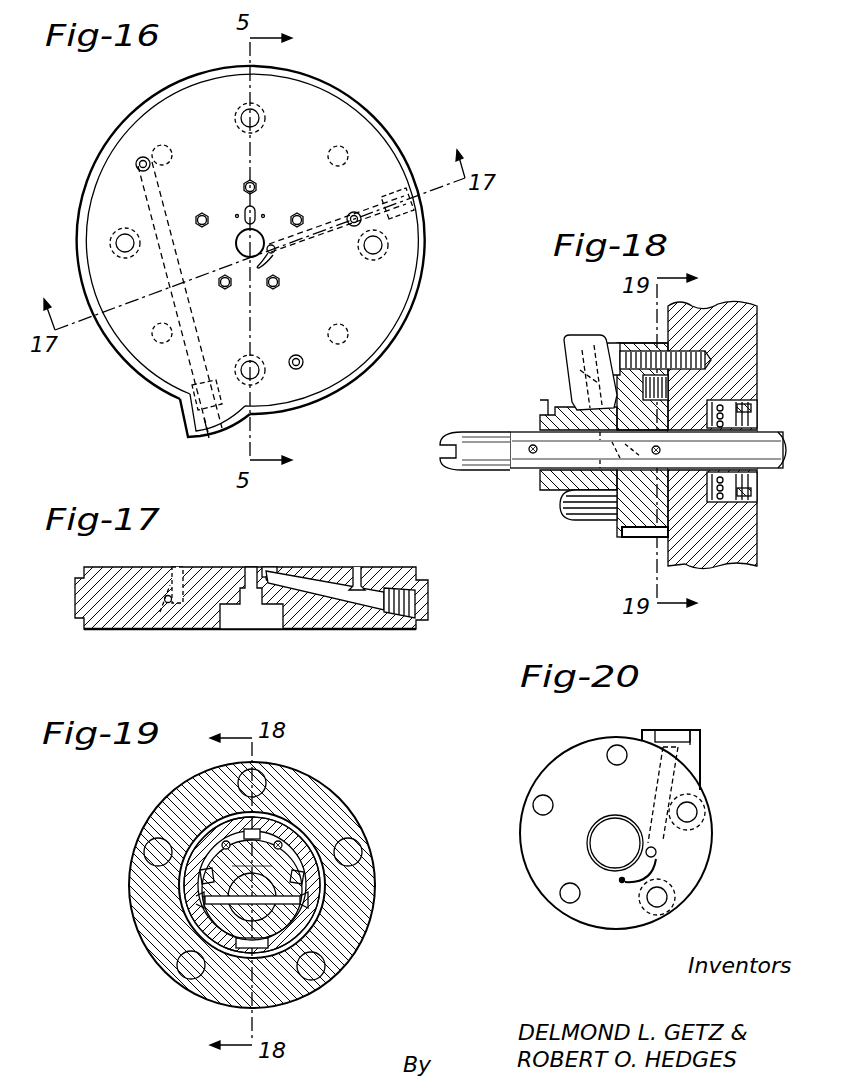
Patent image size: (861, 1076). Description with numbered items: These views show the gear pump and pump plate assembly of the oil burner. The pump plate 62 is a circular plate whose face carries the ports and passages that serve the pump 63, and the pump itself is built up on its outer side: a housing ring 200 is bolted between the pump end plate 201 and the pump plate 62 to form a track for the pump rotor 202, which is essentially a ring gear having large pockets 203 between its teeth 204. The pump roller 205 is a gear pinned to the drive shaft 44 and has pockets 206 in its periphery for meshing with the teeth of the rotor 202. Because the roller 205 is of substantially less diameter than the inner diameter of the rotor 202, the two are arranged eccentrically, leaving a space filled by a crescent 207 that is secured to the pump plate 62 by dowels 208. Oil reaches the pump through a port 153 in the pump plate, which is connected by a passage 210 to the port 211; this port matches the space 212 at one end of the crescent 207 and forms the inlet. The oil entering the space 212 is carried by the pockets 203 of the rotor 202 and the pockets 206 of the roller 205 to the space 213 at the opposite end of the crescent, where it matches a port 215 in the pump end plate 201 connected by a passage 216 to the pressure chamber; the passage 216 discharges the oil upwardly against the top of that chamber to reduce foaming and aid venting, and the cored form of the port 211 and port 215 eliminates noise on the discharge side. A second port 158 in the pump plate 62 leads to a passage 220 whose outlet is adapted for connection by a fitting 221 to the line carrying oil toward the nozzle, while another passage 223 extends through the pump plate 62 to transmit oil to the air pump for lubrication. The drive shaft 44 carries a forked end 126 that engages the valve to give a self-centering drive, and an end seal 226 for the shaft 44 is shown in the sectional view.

In FIG. 18, the drive shaft 44 is at (522, 456).
In FIG. 19, the drive shaft 44 is at (337, 918).
In FIG. 16, the pump plate 62 is at (147, 118).
In FIG. 17, the pump plate 62 is at (82, 590).
In FIG. 18, the pump plate 62 is at (731, 311).
In FIG. 18, the pump 63 is at (540, 335).
In FIG. 18, the forked end 126 is at (441, 455).
In FIG. 16, the port 153 is at (357, 212).
In FIG. 17, the port 153 is at (360, 566).
In FIG. 16, the port 158 is at (137, 161).
In FIG. 17, the port 158 is at (178, 566).
In FIG. 18, the housing ring 200 is at (651, 343).
In FIG. 19, the housing ring 200 is at (157, 948).
In FIG. 18, the pump end plate 201 is at (633, 538).
In FIG. 20, the pump end plate 201 is at (557, 762).
In FIG. 18, the pump rotor 202 is at (615, 519).
In FIG. 19, the pump rotor 202 is at (282, 828).
In FIG. 19, the pockets 203 is at (205, 838).
In FIG. 19, the teeth 204 is at (212, 847).
In FIG. 18, the pump roller 205 is at (652, 540).
In FIG. 19, the pump roller 205 is at (230, 947).
In FIG. 19, the pockets 206 is at (215, 880).
In FIG. 18, the crescent 207 is at (640, 390).
In FIG. 19, the crescent 207 is at (303, 885).
In FIG. 19, the dowels 208 is at (285, 845).
In FIG. 16, the passage 210 is at (325, 228).
In FIG. 17, the passage 210 is at (326, 588).
In FIG. 16, the port 211 is at (274, 257).
In FIG. 17, the port 211 is at (270, 570).
In FIG. 19, the space 212 is at (300, 908).
In FIG. 19, the space 213 is at (200, 900).
In FIG. 20, the port 215 is at (625, 882).
In FIG. 18, the passage 216 is at (598, 383).
In FIG. 20, the passage 216 is at (670, 778).
In FIG. 16, the passage 220 is at (150, 213).
In FIG. 17, the passage 220 is at (162, 612).
In FIG. 16, the fitting 221 is at (210, 437).
In FIG. 16, the passage 223 is at (298, 369).
In FIG. 18, the end seal 226 is at (757, 503).